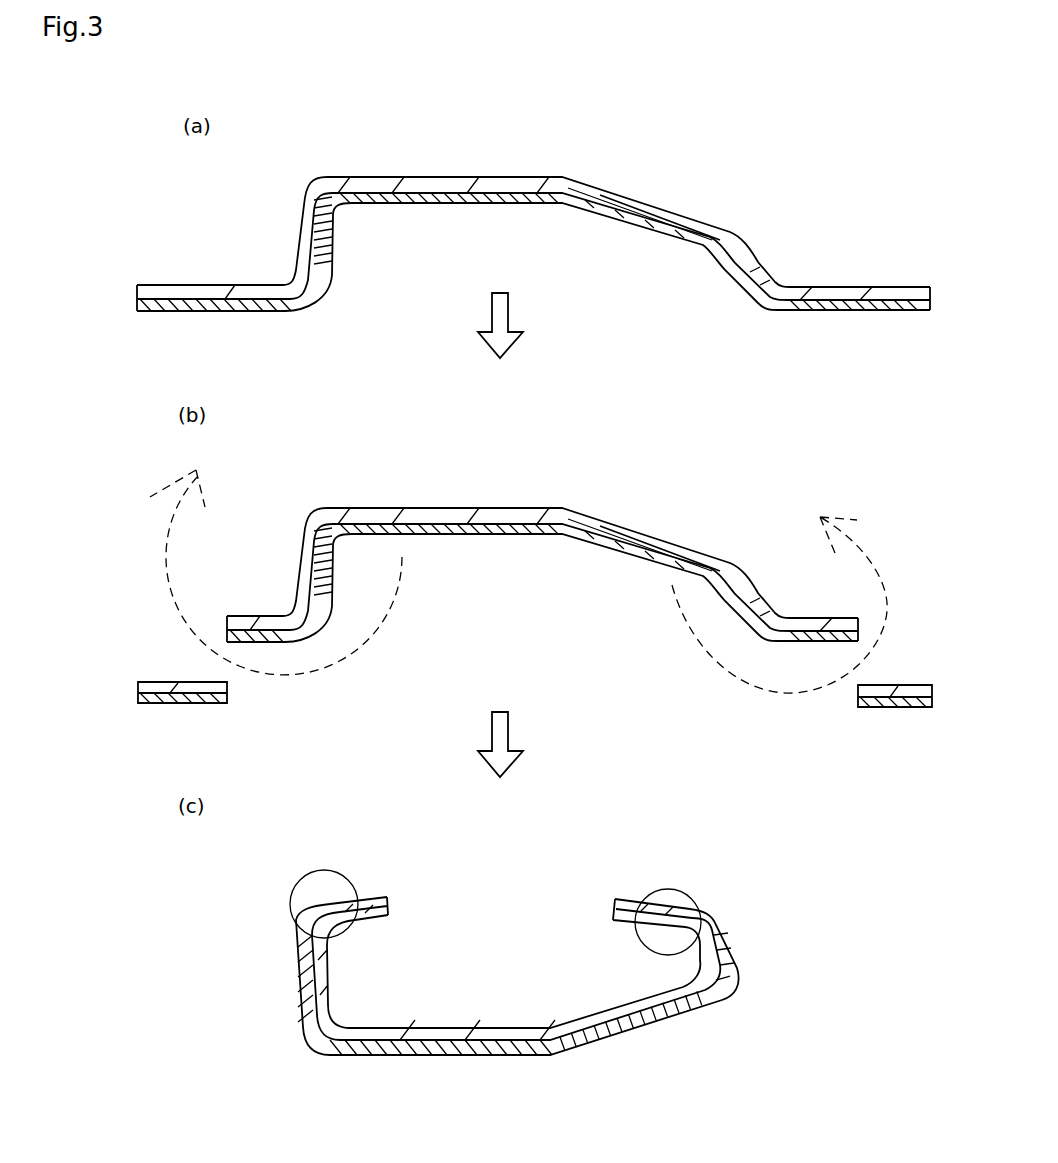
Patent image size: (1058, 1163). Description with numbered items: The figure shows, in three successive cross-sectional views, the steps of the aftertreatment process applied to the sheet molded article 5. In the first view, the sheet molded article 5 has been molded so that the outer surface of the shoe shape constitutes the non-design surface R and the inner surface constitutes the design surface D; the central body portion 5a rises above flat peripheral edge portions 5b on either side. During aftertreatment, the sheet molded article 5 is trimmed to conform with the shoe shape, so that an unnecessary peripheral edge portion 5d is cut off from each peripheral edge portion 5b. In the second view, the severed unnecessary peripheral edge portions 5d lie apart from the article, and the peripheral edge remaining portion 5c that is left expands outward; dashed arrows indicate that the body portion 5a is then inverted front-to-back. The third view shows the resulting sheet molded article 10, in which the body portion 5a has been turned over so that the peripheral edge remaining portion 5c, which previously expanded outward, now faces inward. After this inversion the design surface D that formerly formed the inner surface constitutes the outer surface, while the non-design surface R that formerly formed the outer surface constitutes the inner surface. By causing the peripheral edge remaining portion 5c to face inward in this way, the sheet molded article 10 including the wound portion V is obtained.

The sheet molded article 5 is at (356, 144).
The body portion 5a is at (615, 192).
The peripheral edge portion 5b is at (212, 278).
The peripheral edge remaining portion 5c is at (233, 613).
The unnecessary peripheral edge portion 5d is at (153, 680).
The sheet molded article 10 is at (488, 918).
The non-design surface R is at (493, 176).
The design surface D is at (507, 204).
The wound portion V is at (290, 916).